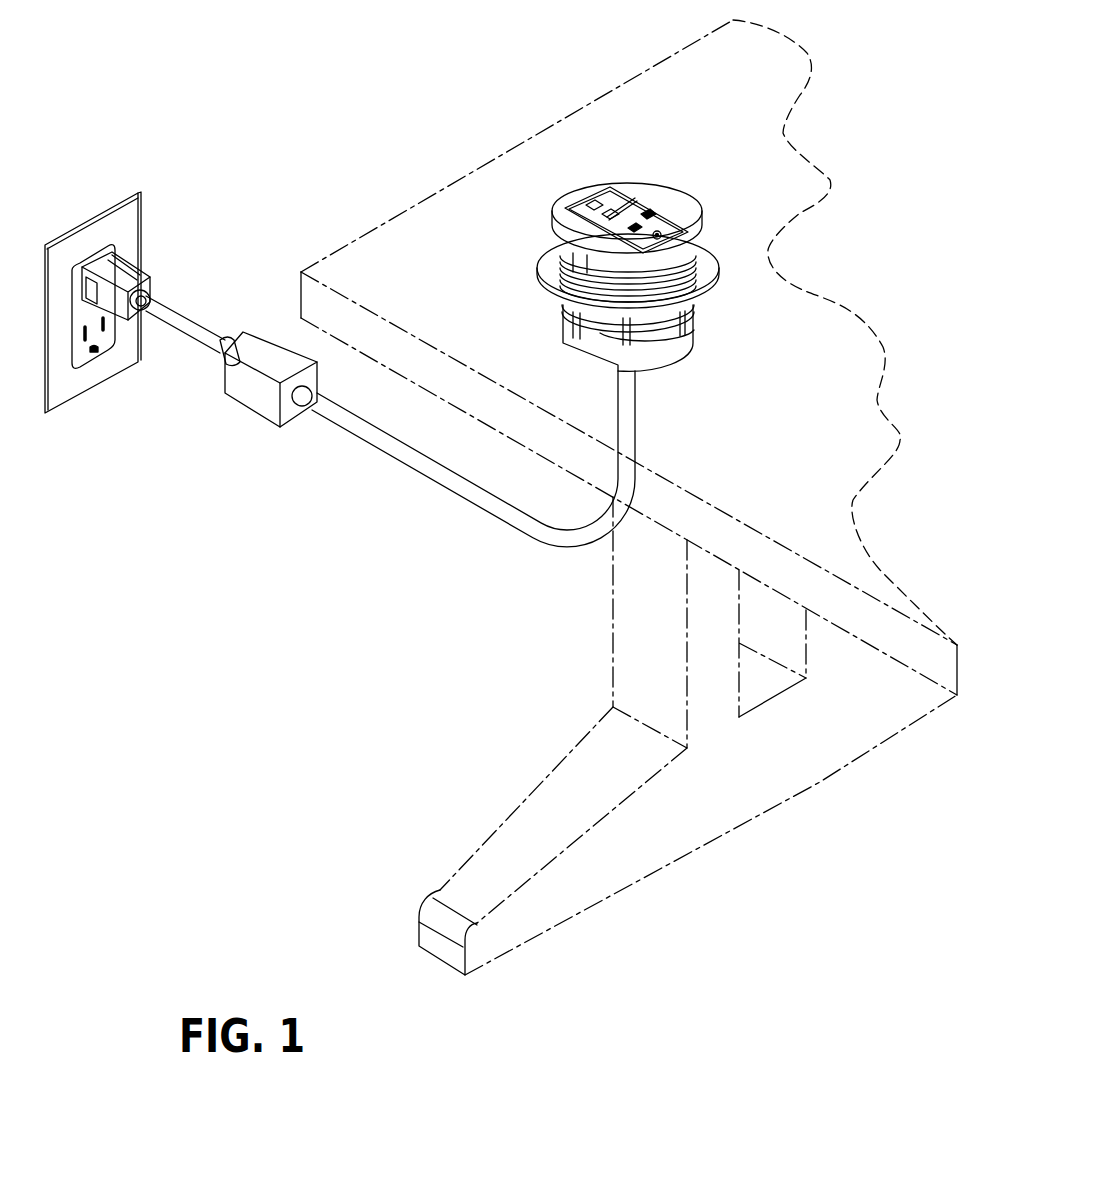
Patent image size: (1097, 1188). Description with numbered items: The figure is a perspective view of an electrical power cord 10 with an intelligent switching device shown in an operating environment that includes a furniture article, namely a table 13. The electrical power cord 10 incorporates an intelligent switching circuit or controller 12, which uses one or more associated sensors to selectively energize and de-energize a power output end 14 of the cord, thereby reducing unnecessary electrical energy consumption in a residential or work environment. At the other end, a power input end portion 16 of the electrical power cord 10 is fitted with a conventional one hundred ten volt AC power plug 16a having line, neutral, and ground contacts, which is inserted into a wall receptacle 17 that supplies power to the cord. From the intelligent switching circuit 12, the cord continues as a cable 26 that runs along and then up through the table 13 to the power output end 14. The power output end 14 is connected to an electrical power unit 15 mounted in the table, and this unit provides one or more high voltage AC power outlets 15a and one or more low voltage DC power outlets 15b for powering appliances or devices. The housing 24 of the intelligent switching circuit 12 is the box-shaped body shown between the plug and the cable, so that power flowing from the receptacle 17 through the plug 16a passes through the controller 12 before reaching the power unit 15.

The electrical power cord 10 is at (246, 510).
The intelligent switching circuit 12 is at (255, 347).
The table 13 is at (449, 188).
The power output end 14 is at (646, 272).
The electrical power unit 15 is at (653, 171).
The high voltage AC power outlet 15a is at (667, 213).
The low voltage DC power outlet 15b is at (622, 189).
The power input end portion 16 is at (161, 322).
The 110V AC power plug 16a is at (127, 268).
The receptacle 17 is at (77, 362).
The housing 24 is at (237, 390).
The cable 26 is at (425, 473).